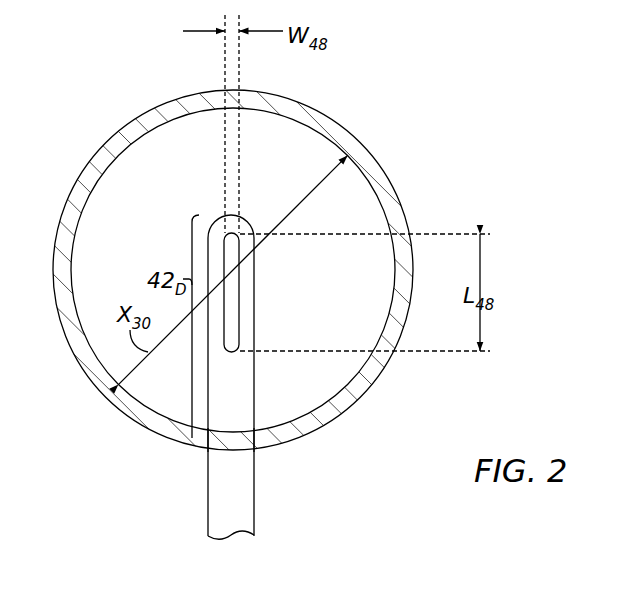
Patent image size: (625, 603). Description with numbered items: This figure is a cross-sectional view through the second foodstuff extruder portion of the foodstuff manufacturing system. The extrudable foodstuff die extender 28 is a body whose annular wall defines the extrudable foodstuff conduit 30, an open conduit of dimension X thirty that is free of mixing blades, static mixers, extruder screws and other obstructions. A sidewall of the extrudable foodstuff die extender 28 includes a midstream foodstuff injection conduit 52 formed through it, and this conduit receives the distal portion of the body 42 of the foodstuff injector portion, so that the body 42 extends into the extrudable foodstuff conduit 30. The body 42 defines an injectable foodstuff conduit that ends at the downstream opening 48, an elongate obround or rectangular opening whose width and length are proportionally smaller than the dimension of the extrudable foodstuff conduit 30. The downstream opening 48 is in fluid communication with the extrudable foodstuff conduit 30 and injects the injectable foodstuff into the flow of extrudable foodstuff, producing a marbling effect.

The extrudable foodstuff die extender 28 is at (308, 101).
The extrudable foodstuff conduit 30 is at (294, 164).
The body 42 is at (257, 494).
The downstream opening 48 is at (238, 324).
The midstream foodstuff injection conduit 52 is at (235, 440).